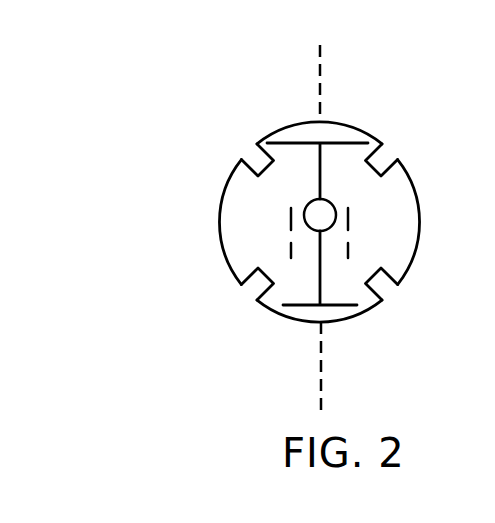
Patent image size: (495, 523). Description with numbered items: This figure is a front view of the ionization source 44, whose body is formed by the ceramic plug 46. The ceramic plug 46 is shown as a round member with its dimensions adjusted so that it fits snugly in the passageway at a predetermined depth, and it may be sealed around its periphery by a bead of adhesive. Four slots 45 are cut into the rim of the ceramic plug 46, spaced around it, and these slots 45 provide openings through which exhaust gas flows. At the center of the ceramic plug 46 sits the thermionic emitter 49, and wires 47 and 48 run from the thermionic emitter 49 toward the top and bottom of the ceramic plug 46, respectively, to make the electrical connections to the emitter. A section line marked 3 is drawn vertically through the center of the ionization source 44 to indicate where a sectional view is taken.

The section line 3- 3 is at (308, 398).
The ionization source 44 is at (289, 125).
The ceramic plug 46 is at (256, 201).
The slots 45 is at (258, 158).
The wire 47 is at (321, 176).
The wire 48 is at (320, 272).
The thermionic emitter 49 is at (337, 208).